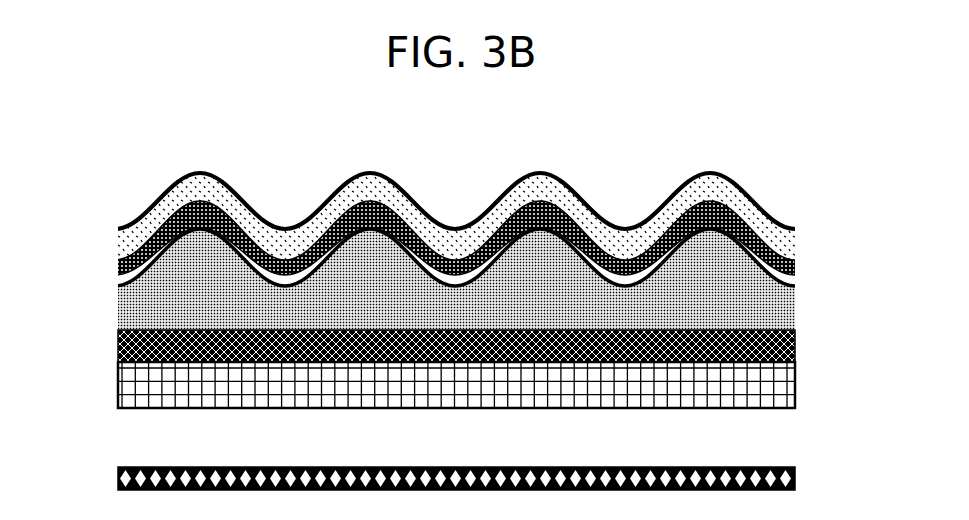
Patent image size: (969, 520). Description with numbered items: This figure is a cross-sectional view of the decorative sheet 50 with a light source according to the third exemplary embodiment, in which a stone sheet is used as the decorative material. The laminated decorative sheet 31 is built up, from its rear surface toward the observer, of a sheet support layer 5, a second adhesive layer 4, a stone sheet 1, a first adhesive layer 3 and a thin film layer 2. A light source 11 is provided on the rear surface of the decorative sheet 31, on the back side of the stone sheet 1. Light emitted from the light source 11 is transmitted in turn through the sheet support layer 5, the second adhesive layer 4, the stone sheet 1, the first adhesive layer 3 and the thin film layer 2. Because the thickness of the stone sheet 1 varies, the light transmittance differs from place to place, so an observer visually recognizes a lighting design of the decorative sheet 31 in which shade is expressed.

The decorative sheet with a light source 50 is at (74, 140).
The decorative sheet 31 is at (110, 170).
The thin film layer 2 is at (753, 193).
The first adhesive layer 3 is at (790, 247).
The stone sheet 1 is at (763, 312).
The second adhesive layer 4 is at (795, 342).
The sheet support layer 5 is at (767, 388).
The light source 11 is at (795, 478).